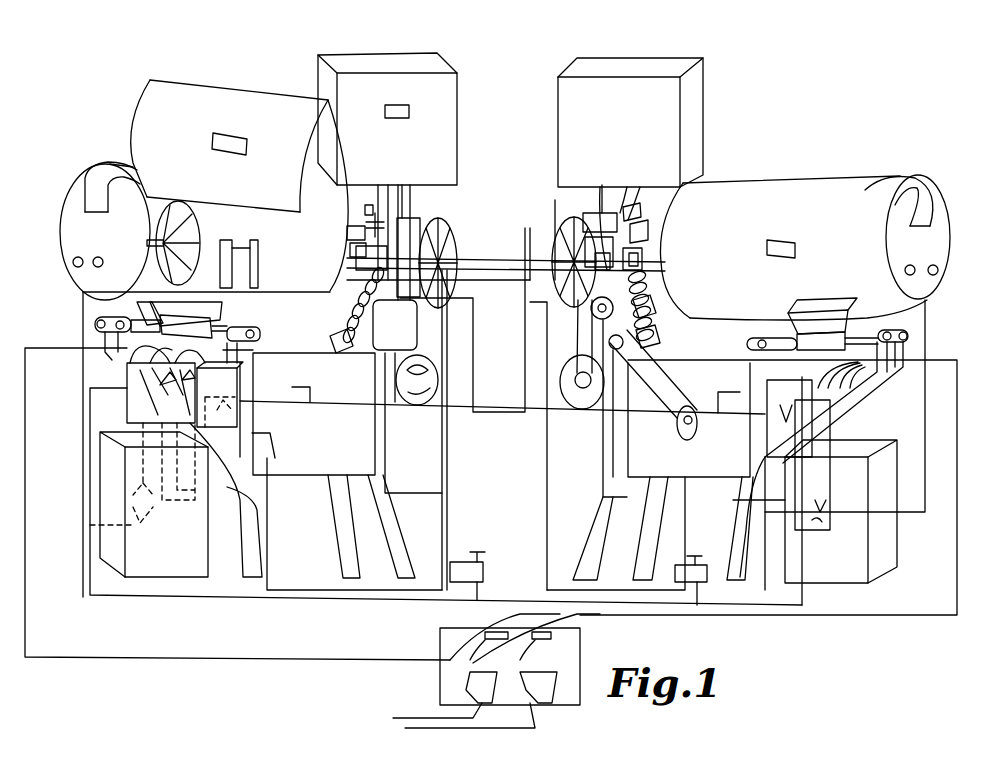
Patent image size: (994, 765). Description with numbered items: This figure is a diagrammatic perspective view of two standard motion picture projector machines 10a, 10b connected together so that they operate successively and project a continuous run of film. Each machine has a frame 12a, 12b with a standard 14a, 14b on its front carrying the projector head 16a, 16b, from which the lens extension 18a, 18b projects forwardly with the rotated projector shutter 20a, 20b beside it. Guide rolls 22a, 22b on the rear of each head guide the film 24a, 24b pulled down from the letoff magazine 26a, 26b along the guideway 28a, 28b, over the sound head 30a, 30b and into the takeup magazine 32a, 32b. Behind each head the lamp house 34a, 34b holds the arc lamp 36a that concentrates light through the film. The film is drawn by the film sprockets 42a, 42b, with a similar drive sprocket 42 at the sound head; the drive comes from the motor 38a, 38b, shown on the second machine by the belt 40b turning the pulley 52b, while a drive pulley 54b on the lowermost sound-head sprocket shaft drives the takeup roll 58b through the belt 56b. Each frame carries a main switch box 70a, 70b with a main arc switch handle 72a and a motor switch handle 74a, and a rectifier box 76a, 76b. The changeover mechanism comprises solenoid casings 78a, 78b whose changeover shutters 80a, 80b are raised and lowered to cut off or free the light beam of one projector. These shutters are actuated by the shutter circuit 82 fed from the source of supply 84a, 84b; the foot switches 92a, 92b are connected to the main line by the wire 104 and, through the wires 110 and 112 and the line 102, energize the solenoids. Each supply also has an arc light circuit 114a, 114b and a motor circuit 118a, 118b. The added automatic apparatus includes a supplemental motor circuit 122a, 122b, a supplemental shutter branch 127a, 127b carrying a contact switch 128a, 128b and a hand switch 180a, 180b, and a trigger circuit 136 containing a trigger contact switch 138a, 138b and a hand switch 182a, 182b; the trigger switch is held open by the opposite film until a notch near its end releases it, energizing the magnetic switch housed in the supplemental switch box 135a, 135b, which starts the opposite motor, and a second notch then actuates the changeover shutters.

The projector machine 10a is at (122, 98).
The projector machine 10b is at (808, 125).
The lamp house 34a is at (125, 178).
The lamp house 34b is at (888, 187).
The arc lamp 36a is at (240, 245).
The film letoff magazine 26a is at (445, 150).
The film letoff magazine 26b is at (697, 126).
The contact switch 128a is at (695, 180).
The contact switch 128b is at (368, 205).
The film 24a is at (385, 228).
The film 24b is at (635, 212).
The guide rolls 22a is at (404, 215).
The guide rolls 22b is at (621, 212).
The supplemental branch of shutter circuit 127a is at (560, 235).
The supplemental branch of shutter circuit 127b is at (416, 262).
The solenoid casing 78a is at (370, 228).
The solenoid casing 78b is at (640, 218).
The projector head 16a is at (409, 218).
The projector head 16b is at (598, 228).
The lens extension 18a is at (445, 236).
The lens extension 18b is at (573, 238).
The projector shutter 20a is at (455, 248).
The projector shutter 20b is at (570, 250).
The wire 110 is at (468, 257).
The line of solenoid circuit 102 is at (480, 267).
The changeover shutter 80a is at (355, 250).
The changeover shutter 80b is at (648, 232).
The guideway 28a is at (358, 272).
The guideway 28b is at (650, 285).
The trigger contact switch 138a is at (660, 310).
The trigger contact switch 138b is at (350, 290).
The sound head 30a is at (352, 320).
The sound head 30b is at (656, 324).
The film sprockets 42a is at (380, 312).
The film sprockets 42b is at (656, 300).
The drive sprocket 42 is at (660, 340).
The film takeup magazine 32a is at (300, 352).
The film takeup magazine 32b is at (706, 356).
The wire 112 is at (512, 285).
The trigger circuit 136 is at (536, 305).
The pulley 52b is at (590, 312).
The belt 40b is at (588, 334).
The arc light circuit 114a is at (83, 325).
The arc light circuit 114b is at (928, 322).
The main switch box 70a is at (128, 395).
The main switch box 70b is at (872, 402).
The main arc switch handle 72a is at (133, 410).
The motor switch handle 74a is at (199, 393).
The supplemental switch box 135a is at (244, 425).
The supplemental switch box 135b is at (767, 428).
The hand switch 182a is at (292, 387).
The hand switch 182b is at (718, 392).
The standard 14a is at (378, 366).
The standard 14b is at (624, 392).
The drive pulley 54b is at (650, 392).
The belt 56b is at (672, 395).
The film takeup roll 58b is at (686, 432).
The motor 38a is at (421, 408).
The motor 38b is at (583, 409).
The source of supply 84a is at (30, 412).
The source of supply 84b is at (960, 415).
The motor circuit 118a is at (30, 445).
The motor circuit 118b is at (960, 445).
The hand switch 180a is at (275, 440).
The hand switch 180b is at (763, 460).
The supplemental motor circuit 122a is at (402, 447).
The supplemental motor circuit 122b is at (733, 500).
The frame 12a is at (400, 525).
The frame 12b is at (597, 522).
The shutter circuit 82 is at (547, 496).
The foot switch 92a is at (462, 560).
The foot switch 92b is at (680, 563).
The wire 104 is at (493, 602).
The rectifier box 76a is at (105, 542).
The rectifier box 76b is at (890, 546).